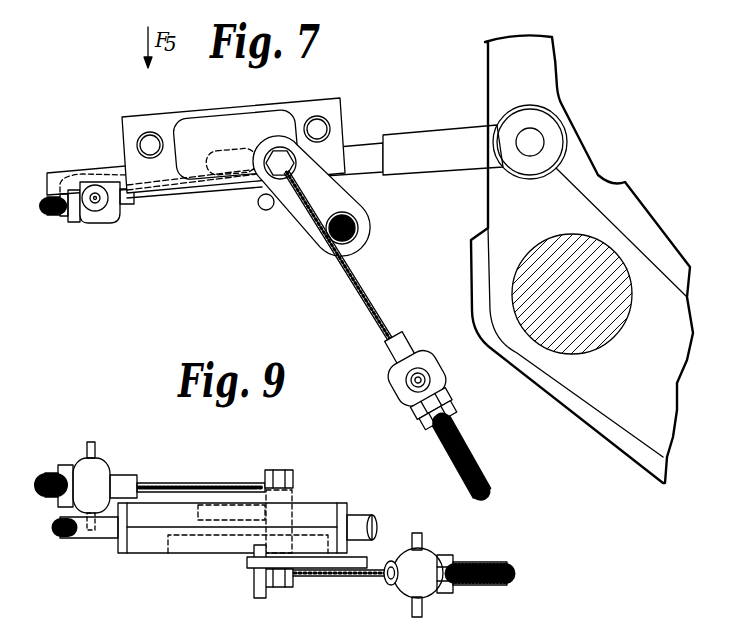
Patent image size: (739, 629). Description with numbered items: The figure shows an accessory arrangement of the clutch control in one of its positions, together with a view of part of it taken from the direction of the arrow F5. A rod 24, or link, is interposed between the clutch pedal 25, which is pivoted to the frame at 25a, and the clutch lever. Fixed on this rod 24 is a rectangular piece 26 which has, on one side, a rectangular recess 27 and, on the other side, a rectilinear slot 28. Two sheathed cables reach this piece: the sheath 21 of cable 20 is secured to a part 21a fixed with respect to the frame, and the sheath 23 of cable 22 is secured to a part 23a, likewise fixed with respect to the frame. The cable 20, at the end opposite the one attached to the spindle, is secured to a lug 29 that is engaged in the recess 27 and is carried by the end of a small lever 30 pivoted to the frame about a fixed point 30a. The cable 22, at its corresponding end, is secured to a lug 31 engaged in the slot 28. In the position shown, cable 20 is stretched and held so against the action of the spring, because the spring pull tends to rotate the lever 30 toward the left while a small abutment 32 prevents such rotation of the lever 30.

In FIG. 7, the cable 20 is at (343, 273).
In FIG. 9, the cable 20 is at (339, 573).
In FIG. 7, the sheath 21 is at (445, 437).
In FIG. 9, the sheath 21 is at (473, 563).
In FIG. 7, the part fixed with respect to the frame 21a is at (410, 379).
In FIG. 9, the part fixed with respect to the frame 21a is at (416, 611).
In FIG. 7, the cable 22 is at (147, 186).
In FIG. 9, the cable 22 is at (157, 485).
In FIG. 7, the sheath 23 is at (72, 217).
In FIG. 7, the part fixed with respect to the frame 23a is at (95, 196).
In FIG. 9, the part fixed with respect to the frame 23a is at (98, 458).
In FIG. 7, the rod 24 is at (355, 155).
In FIG. 9, the rod 24 is at (97, 534).
In FIG. 7, the clutch pedal 25 is at (570, 175).
In FIG. 7, the pivot of clutch pedal 25a is at (560, 293).
In FIG. 7, the rectangular piece 26 is at (153, 124).
In FIG. 9, the rectangular piece 26 is at (157, 537).
In FIG. 7, the rectangular recess 27 is at (207, 128).
In FIG. 9, the rectangular recess 27 is at (207, 542).
In FIG. 7, the rectilinear slot 28 is at (227, 162).
In FIG. 9, the rectilinear slot 28 is at (217, 512).
In FIG. 7, the lug 29 is at (280, 163).
In FIG. 9, the lug 29 is at (283, 588).
In FIG. 7, the small lever 30 is at (330, 202).
In FIG. 9, the small lever 30 is at (352, 569).
In FIG. 7, the fixed pivot point 30a is at (357, 228).
In FIG. 9, the lug 31 is at (280, 497).
In FIG. 7, the abutment 32 is at (261, 207).
In FIG. 9, the abutment 32 is at (258, 588).